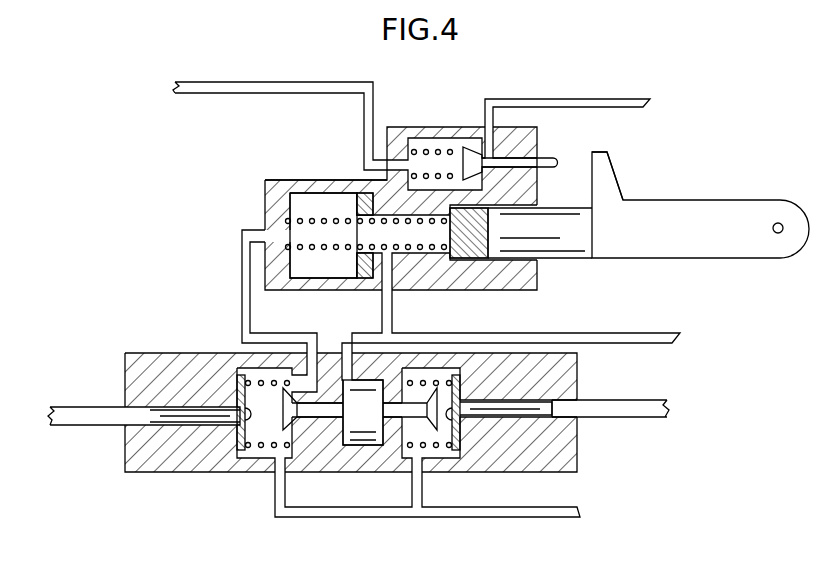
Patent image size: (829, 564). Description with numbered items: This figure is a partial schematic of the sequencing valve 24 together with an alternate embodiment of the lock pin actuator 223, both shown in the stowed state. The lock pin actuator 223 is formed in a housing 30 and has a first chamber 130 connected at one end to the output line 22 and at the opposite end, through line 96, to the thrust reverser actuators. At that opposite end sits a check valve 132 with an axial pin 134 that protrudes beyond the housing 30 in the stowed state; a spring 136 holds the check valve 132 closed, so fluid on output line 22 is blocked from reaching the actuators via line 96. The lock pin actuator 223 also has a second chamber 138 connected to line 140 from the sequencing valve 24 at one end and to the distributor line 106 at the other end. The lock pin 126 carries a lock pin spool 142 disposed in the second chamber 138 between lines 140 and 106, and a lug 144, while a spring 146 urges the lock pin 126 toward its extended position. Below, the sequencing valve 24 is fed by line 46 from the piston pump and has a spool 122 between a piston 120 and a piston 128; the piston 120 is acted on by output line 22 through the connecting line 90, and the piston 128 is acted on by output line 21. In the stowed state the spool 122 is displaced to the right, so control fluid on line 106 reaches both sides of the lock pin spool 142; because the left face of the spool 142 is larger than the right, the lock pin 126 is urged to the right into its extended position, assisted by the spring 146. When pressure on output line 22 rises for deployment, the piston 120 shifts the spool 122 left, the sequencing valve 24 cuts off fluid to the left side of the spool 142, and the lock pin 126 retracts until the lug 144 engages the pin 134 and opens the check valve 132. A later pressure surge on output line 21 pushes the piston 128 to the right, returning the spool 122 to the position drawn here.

The output line 21 is at (100, 388).
The output line 22 is at (258, 70).
The sequencing valve 24 is at (192, 352).
The housing 30 is at (538, 277).
The line 46 is at (508, 517).
The connecting line 90 is at (636, 417).
The line 96 is at (590, 99).
The distributor line 106 is at (648, 333).
The piston 120 is at (530, 417).
The spool 122 is at (348, 470).
The lock pin 126 is at (686, 246).
The piston 128 is at (188, 422).
The first chamber 130 is at (430, 127).
The check valve 132 is at (462, 154).
The axial pin 134 is at (548, 158).
The spring 136 is at (434, 149).
The second chamber 138 is at (312, 205).
The line 140 is at (242, 284).
The lock pin spool 142 is at (372, 282).
The lug 144 is at (611, 173).
The spring 146 is at (340, 251).
The lock pin actuator 223 is at (265, 197).